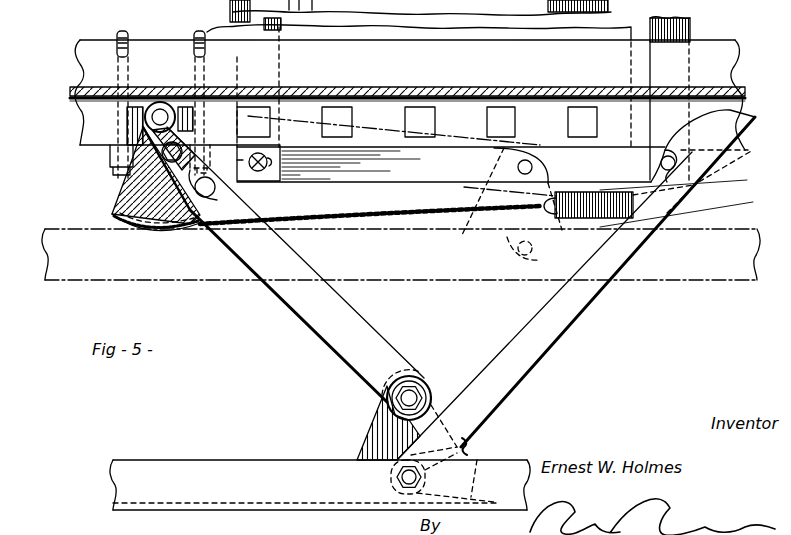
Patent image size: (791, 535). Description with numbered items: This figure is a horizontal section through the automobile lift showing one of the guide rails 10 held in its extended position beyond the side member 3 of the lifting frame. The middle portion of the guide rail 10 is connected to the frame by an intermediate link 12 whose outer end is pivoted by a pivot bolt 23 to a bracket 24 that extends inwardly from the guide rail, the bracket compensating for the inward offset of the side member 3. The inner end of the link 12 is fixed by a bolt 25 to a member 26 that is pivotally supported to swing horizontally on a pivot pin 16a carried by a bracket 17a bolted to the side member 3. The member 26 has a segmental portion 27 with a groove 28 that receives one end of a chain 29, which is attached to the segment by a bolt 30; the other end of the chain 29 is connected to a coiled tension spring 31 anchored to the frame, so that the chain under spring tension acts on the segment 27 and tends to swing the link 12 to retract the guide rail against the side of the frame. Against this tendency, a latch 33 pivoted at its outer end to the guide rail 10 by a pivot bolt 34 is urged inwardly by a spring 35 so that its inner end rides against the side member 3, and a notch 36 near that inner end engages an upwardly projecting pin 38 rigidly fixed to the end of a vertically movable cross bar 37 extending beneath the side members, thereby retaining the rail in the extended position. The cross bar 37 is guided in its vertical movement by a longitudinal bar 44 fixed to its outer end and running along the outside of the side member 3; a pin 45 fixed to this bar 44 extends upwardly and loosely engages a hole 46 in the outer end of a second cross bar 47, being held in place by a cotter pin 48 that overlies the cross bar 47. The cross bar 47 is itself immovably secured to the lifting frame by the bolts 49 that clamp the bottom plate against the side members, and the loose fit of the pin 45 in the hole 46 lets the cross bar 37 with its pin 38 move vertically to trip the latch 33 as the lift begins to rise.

The side member 3 is at (80, 72).
The guide rail 10 is at (446, 282).
The intermediate link 12 is at (464, 188).
The pivot pin 16a is at (161, 108).
The bracket 17a is at (117, 156).
The pivot bolt 23 is at (413, 395).
The bracket 24 is at (477, 217).
The bolt 25 is at (209, 190).
The member 26 is at (147, 172).
The segmental portion 27 is at (147, 232).
The groove 28 is at (153, 233).
The chain 29 is at (357, 220).
The bolt 30 is at (117, 215).
The coiled tension spring 31 is at (580, 220).
The latch 33 is at (671, 230).
The pivot bolt 34 is at (394, 478).
The spring 35 is at (471, 445).
The notch 36 is at (670, 147).
The cross bar 37 is at (690, 32).
The pin 38 is at (661, 163).
The longitudinal bar 44 is at (451, 164).
The pin 45 is at (254, 175).
The hole 46 is at (277, 183).
The cross bar 47 is at (237, 26).
The cotter pin 48 is at (402, 126).
The bolt 49 is at (394, 131).